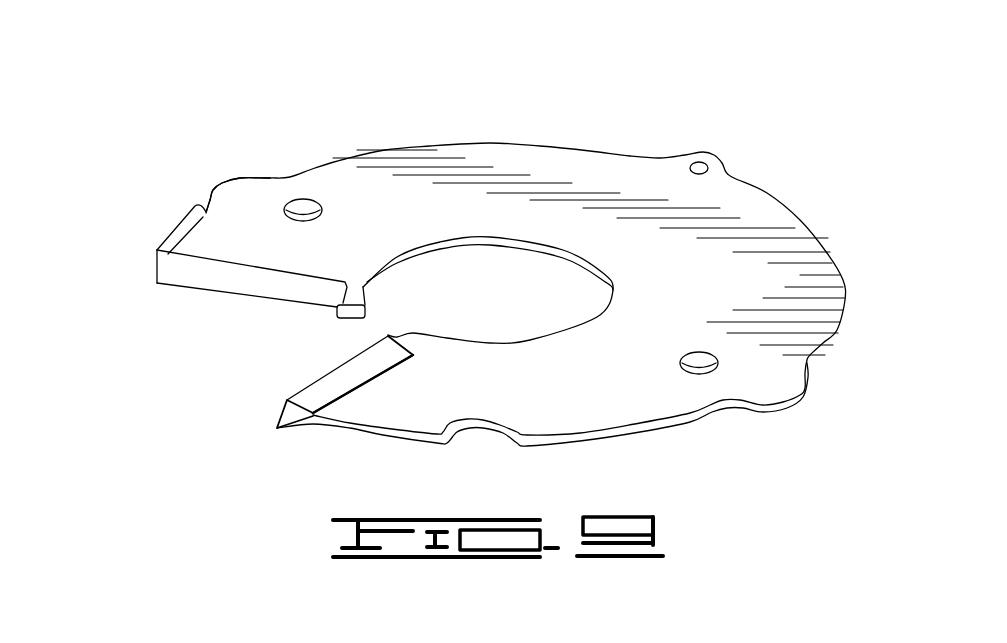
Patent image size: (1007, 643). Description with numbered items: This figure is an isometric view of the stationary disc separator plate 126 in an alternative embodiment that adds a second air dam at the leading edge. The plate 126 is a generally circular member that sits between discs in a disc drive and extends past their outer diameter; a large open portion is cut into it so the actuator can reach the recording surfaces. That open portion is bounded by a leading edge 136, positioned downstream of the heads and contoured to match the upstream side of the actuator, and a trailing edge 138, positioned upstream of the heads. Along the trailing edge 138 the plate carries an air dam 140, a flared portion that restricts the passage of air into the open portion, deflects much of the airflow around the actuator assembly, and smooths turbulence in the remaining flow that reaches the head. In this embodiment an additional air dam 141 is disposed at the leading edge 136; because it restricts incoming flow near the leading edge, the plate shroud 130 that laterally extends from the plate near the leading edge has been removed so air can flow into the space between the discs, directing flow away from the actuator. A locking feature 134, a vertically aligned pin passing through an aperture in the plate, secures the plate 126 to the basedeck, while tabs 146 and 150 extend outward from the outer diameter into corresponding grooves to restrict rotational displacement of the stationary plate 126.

The stationary disc separator plate 126 is at (294, 84).
The shroud portion 130 is at (173, 227).
The locking feature 134 is at (702, 160).
The leading edge 136 is at (310, 390).
The trailing edge 138 is at (183, 280).
The air dam 140 is at (237, 282).
The additional air dam 141 is at (340, 382).
The tab 146 is at (227, 183).
The tab 150 is at (775, 389).